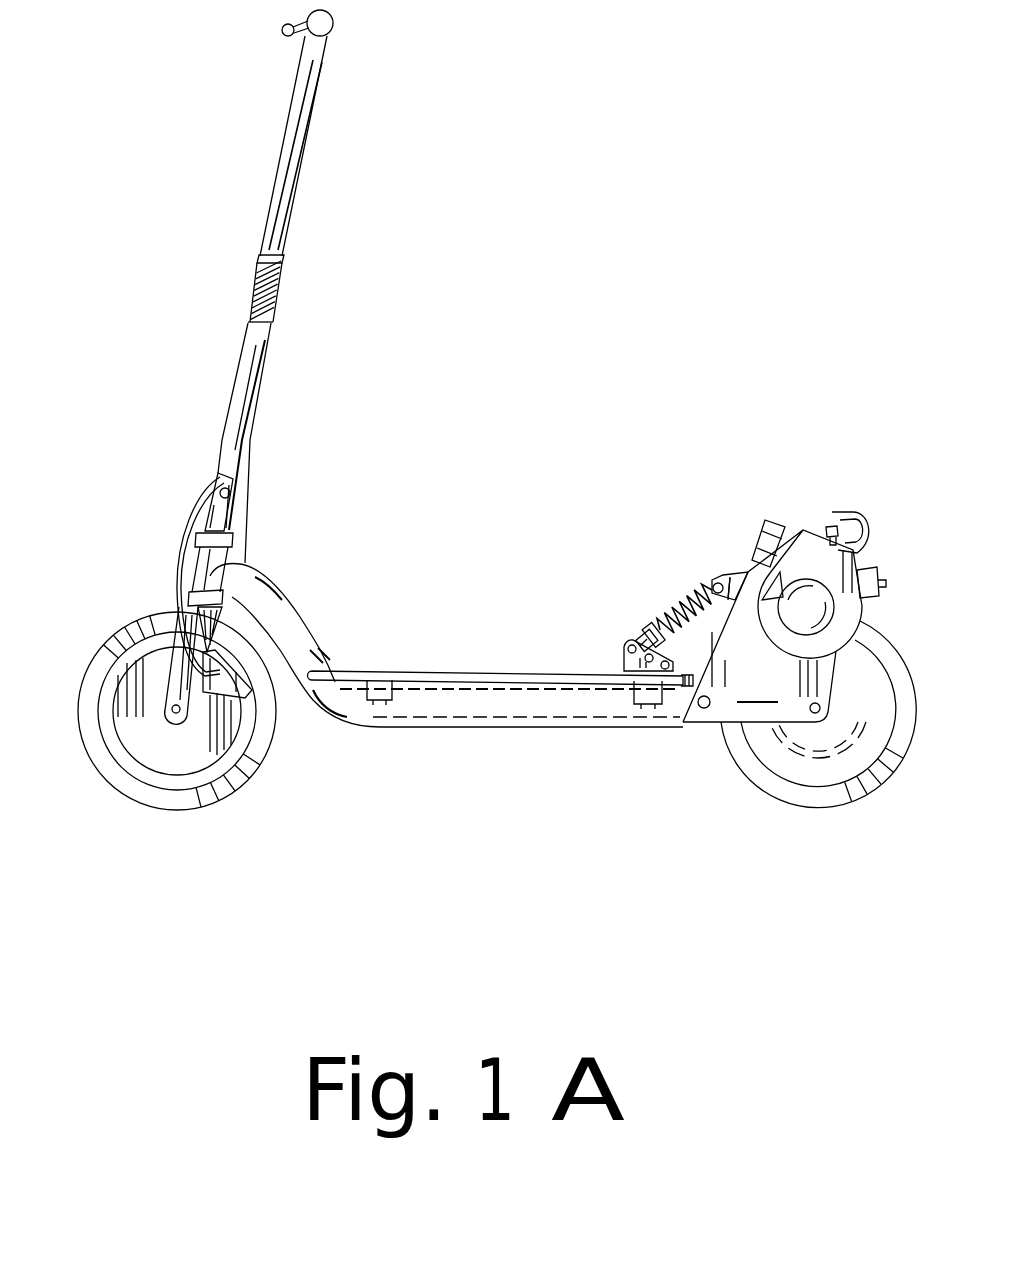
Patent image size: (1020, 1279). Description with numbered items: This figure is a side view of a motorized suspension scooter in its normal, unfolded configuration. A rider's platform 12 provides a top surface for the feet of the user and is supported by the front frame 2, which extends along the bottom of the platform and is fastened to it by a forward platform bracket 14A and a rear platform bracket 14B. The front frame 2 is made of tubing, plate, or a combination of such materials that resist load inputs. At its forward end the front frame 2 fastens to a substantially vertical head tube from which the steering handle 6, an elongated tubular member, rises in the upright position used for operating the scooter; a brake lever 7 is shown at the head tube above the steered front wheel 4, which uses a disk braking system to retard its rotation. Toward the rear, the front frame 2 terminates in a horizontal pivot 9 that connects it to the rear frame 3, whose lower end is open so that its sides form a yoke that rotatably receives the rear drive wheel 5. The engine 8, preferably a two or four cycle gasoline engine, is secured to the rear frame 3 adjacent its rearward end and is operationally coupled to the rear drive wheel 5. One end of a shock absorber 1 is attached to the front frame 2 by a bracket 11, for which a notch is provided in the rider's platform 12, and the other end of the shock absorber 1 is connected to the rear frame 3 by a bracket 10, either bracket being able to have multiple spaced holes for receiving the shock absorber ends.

The shock absorber 1 is at (660, 607).
The front frame 2 is at (510, 733).
The rear frame 3 is at (784, 621).
The front wheel 4 is at (132, 803).
The rear drive wheel 5 is at (838, 812).
The steering handle 6 is at (267, 203).
The brake lever 7 is at (173, 600).
The engine 8 is at (813, 525).
The horizontal pivot 9 is at (703, 720).
The bracket 10 is at (728, 570).
The bracket 11 is at (622, 662).
The rider's platform 12 is at (425, 663).
The forward platform bracket 14A is at (388, 814).
The rear platform bracket 14B is at (607, 828).